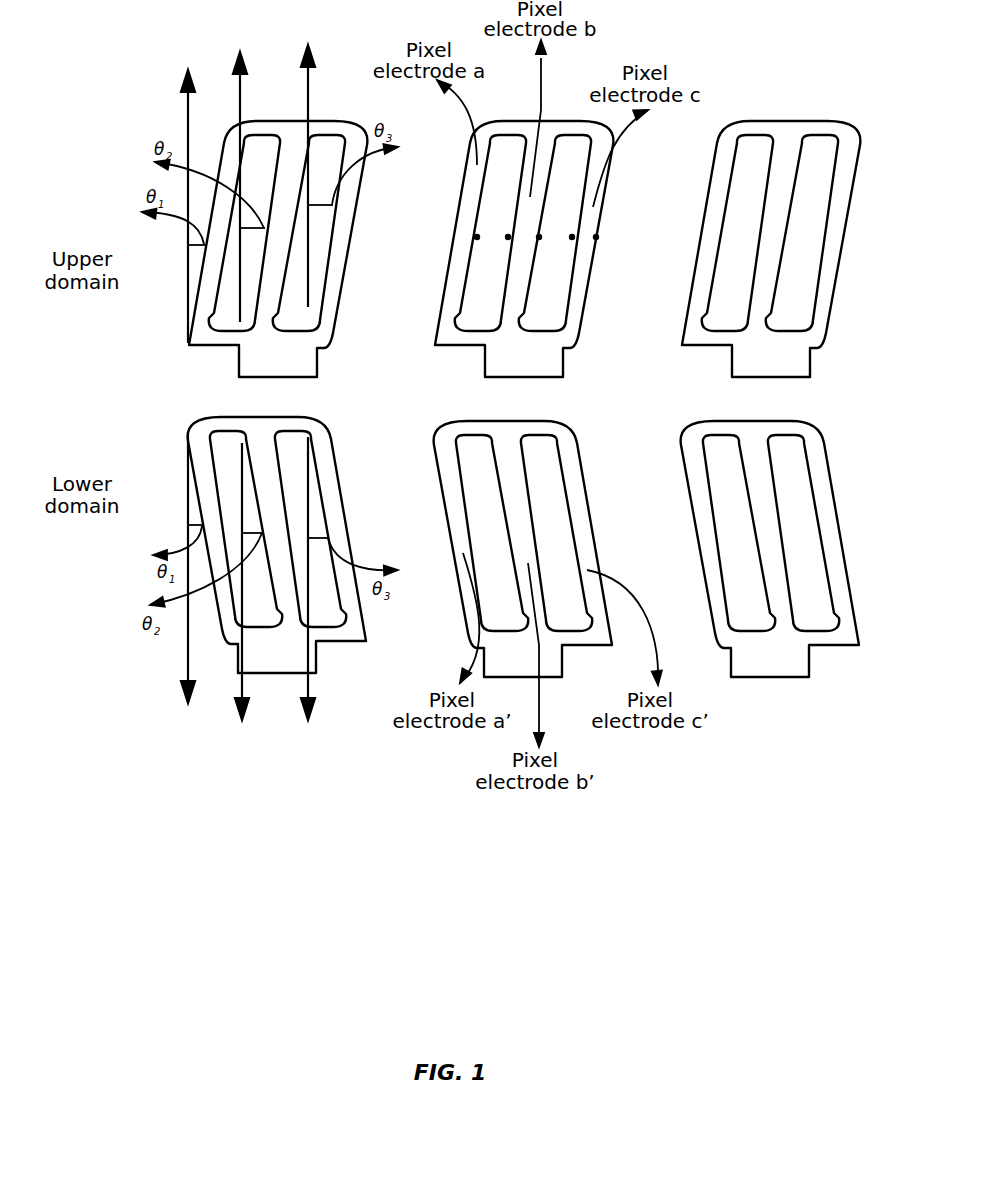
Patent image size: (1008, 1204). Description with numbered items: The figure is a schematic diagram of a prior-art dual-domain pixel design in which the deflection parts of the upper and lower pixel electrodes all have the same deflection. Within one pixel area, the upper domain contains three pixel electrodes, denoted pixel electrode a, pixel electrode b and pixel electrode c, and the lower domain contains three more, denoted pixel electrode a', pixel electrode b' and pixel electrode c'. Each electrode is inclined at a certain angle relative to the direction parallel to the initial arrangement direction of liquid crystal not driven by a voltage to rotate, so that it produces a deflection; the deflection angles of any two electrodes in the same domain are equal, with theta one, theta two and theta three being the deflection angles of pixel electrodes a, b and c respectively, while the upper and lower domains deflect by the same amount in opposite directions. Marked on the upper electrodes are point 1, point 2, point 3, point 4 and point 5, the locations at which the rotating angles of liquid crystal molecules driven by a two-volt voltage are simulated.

The point 1 is at (605, 239).
The point 2 is at (576, 247).
The point 3 is at (546, 228).
The point 4 is at (512, 247).
The point 5 is at (484, 229).